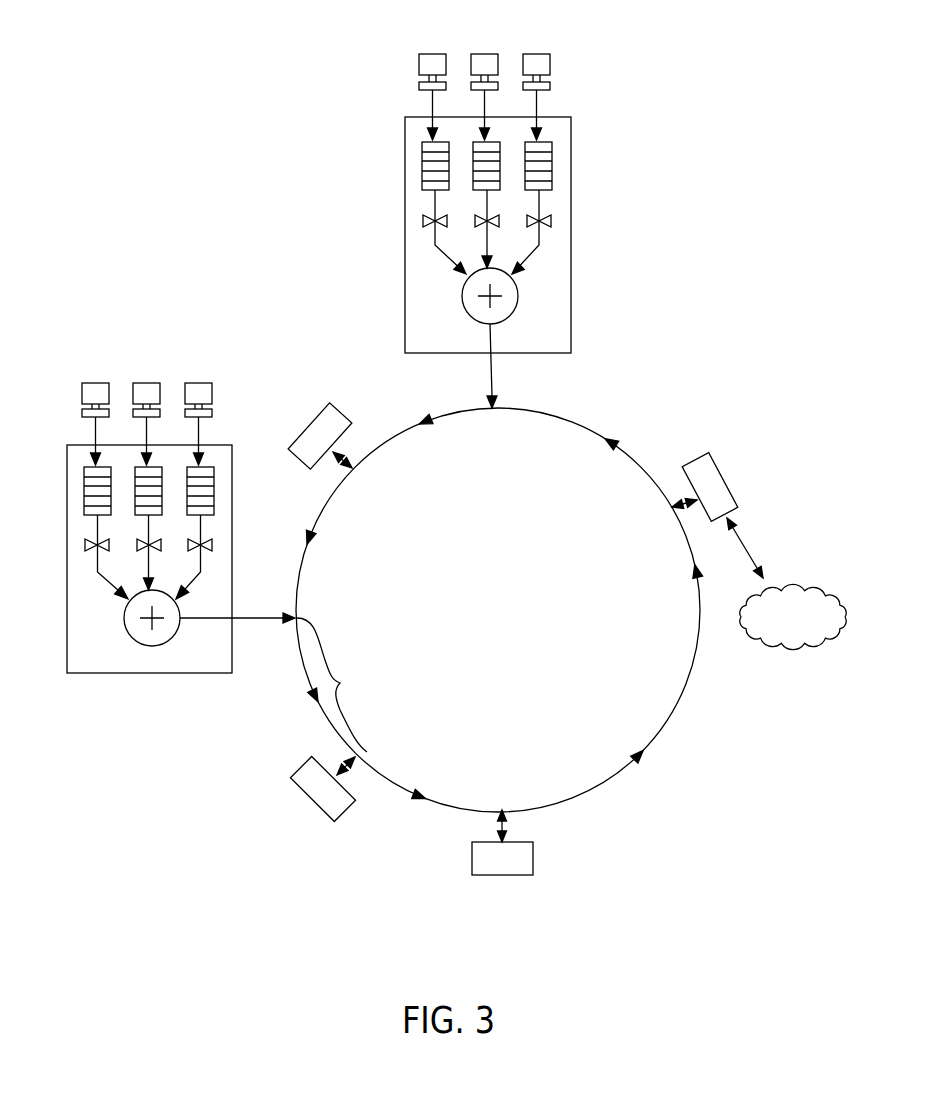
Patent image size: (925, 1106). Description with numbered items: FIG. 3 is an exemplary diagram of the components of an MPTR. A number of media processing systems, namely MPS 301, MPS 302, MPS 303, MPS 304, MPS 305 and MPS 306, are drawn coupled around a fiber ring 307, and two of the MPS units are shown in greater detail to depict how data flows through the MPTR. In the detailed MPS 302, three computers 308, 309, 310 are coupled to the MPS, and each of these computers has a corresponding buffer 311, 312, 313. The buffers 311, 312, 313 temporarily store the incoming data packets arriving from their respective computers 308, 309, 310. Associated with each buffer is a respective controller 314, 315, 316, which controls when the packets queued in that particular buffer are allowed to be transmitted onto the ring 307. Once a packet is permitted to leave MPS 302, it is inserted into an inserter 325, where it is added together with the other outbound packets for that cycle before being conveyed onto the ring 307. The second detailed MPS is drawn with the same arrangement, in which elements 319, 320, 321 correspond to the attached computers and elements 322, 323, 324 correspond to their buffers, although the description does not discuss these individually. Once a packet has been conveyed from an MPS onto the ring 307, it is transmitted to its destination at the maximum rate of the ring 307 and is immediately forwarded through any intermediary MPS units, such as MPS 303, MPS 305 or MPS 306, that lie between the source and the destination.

The MPS 301 is at (722, 470).
The MPS 302 is at (571, 280).
The MPS 303 is at (338, 410).
The MPS 304 is at (232, 483).
The MPS 305 is at (308, 800).
The MPS 306 is at (533, 856).
The fiber ring 307 is at (625, 453).
The computer 308 is at (430, 54).
The computer 309 is at (484, 54).
The computer 310 is at (540, 54).
The buffer 311 is at (422, 162).
The buffer 312 is at (473, 160).
The buffer 313 is at (552, 163).
The controller 314 is at (424, 224).
The controller 315 is at (476, 224).
The controller 316 is at (551, 223).
The source device 319 is at (102, 383).
The source device 320 is at (157, 383).
The source device 321 is at (205, 383).
The buffer queue 322 is at (84, 484).
The buffer queue 323 is at (135, 484).
The buffer queue 324 is at (187, 484).
The inserter 325 is at (512, 312).